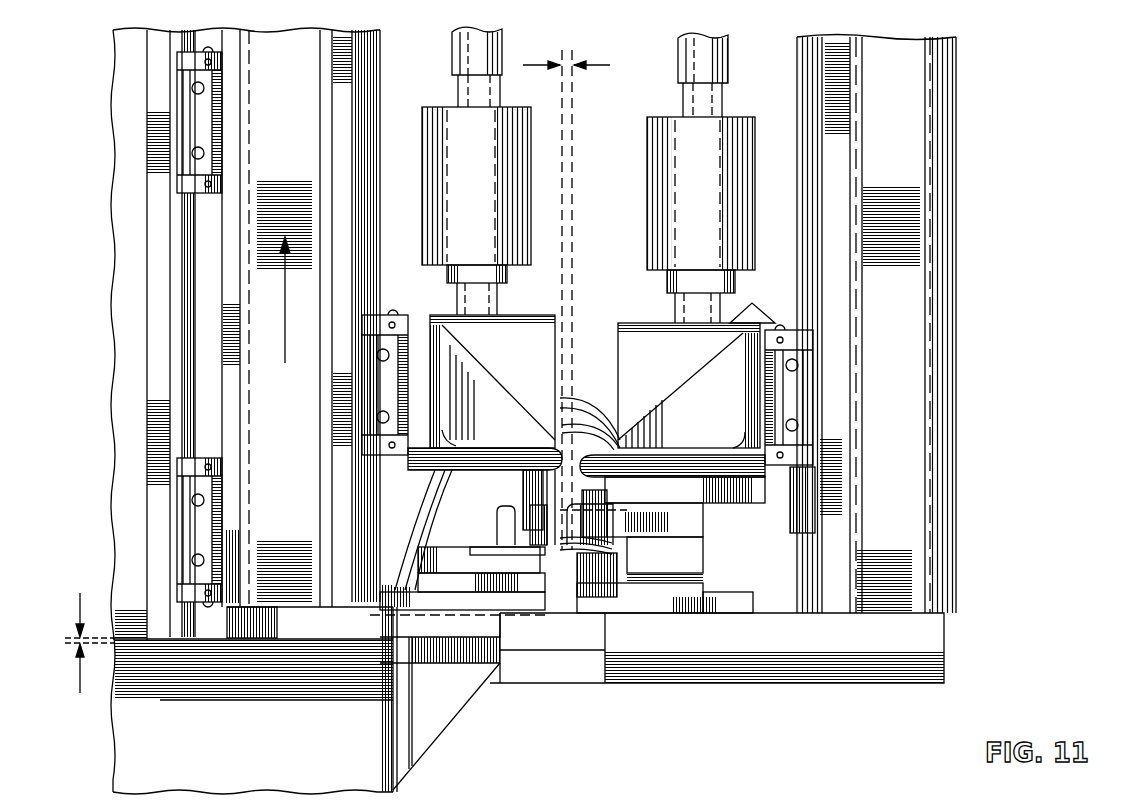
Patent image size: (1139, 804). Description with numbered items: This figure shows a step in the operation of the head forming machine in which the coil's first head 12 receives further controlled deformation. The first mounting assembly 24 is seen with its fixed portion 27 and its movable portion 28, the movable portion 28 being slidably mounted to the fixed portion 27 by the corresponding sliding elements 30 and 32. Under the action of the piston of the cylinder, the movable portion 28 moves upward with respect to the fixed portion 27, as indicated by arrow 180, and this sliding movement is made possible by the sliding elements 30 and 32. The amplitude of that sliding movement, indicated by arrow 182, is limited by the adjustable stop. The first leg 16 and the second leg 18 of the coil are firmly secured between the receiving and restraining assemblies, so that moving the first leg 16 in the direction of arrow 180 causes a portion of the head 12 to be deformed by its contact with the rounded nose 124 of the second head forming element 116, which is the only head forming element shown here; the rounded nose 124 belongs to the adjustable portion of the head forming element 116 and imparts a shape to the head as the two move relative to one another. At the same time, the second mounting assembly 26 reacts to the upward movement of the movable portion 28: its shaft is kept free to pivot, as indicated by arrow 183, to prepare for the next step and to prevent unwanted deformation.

The first head 12 is at (583, 597).
The first leg 16 is at (527, 548).
The second leg 18 is at (610, 543).
The first mounting assembly 24 is at (118, 383).
The second mounting assembly 26 is at (962, 131).
The fixed portion 27 is at (127, 108).
The movable portion 28 is at (283, 79).
The sliding element 30 is at (193, 180).
The sliding element 32 is at (188, 258).
The second head forming element 116 is at (393, 613).
The rounded nose 124 is at (567, 562).
The arrow 180 is at (287, 290).
The arrow 182 is at (66, 641).
The arrow 183 is at (568, 57).